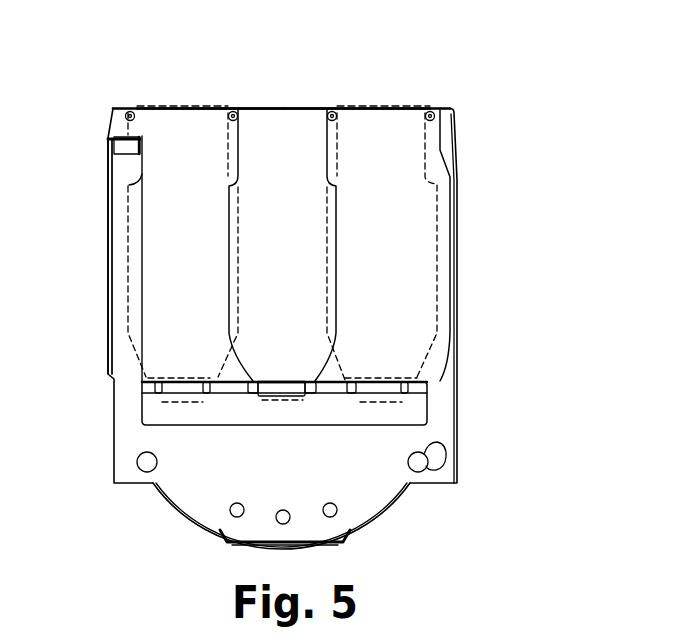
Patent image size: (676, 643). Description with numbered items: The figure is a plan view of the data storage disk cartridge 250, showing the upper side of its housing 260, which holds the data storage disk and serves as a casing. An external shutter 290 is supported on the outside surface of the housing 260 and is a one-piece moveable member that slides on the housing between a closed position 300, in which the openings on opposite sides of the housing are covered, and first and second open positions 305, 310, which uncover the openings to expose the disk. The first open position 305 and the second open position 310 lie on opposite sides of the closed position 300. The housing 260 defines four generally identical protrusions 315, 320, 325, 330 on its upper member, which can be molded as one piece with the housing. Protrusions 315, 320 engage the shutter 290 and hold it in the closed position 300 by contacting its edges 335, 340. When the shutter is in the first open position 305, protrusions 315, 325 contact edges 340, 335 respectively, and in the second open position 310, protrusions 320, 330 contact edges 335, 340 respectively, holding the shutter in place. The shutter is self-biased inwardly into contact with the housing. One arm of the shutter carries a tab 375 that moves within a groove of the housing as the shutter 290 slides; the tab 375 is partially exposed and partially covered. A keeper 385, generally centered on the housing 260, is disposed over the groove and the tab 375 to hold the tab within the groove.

The cartridge 250 is at (98, 99).
The housing 260 is at (108, 237).
The external shutter 290 is at (317, 342).
The closed position 300 is at (283, 137).
The first open position 305 is at (188, 108).
The second open position 310 is at (375, 108).
The protrusion 315 is at (233, 111).
The protrusion 320 is at (332, 111).
The protrusion 325 is at (130, 111).
The protrusion 330 is at (430, 111).
The edge 335 is at (237, 147).
The edge 340 is at (327, 153).
The tab 375 is at (282, 388).
The keeper 385 is at (237, 412).